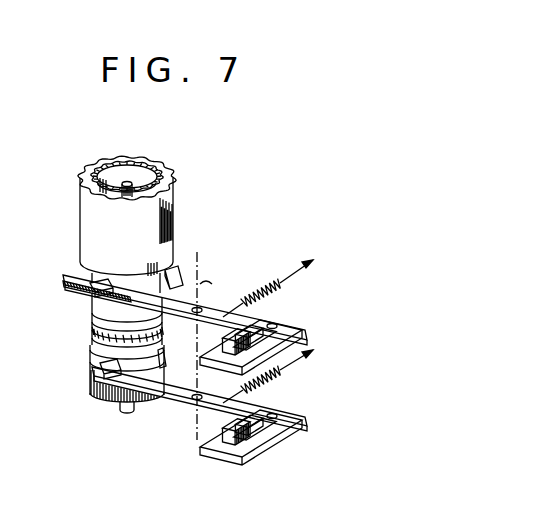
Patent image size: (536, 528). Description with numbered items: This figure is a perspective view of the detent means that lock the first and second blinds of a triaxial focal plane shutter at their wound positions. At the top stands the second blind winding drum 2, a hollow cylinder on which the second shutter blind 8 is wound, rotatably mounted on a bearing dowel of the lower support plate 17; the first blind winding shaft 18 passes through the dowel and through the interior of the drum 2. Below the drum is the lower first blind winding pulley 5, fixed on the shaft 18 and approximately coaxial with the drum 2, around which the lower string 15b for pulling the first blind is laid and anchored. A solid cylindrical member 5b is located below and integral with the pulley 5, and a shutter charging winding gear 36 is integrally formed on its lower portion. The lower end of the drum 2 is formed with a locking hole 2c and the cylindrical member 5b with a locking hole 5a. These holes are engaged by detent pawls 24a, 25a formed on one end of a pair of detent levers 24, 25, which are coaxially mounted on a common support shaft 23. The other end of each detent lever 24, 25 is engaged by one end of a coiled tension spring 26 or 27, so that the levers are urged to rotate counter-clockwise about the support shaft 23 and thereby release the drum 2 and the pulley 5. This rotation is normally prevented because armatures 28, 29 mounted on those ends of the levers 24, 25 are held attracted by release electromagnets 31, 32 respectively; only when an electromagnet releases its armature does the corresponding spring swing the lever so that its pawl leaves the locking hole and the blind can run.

The second blind winding drum 2 is at (98, 172).
The first blind winding shaft 18 is at (134, 186).
The second shutter blind 8 is at (90, 208).
The detent pawl 24a is at (95, 283).
The lower support plate 17 is at (72, 285).
The locking hole 2c is at (90, 310).
The lower string 15b is at (92, 328).
The first blind winding pulley 5 is at (100, 346).
The solid cylindrical member 5b is at (163, 357).
The locking hole 5a is at (92, 385).
The detent pawl 25a is at (112, 398).
The shutter charging winding gear 36 is at (123, 411).
The detent lever 25 is at (168, 400).
The detent lever 24 is at (185, 322).
The support shaft 23 is at (210, 268).
The coiled tension spring 26 is at (268, 283).
The coiled tension spring 27 is at (270, 376).
The armature 28 is at (278, 330).
The release electromagnet 31 is at (273, 347).
The armature 29 is at (290, 428).
The release electromagnet 32 is at (258, 452).